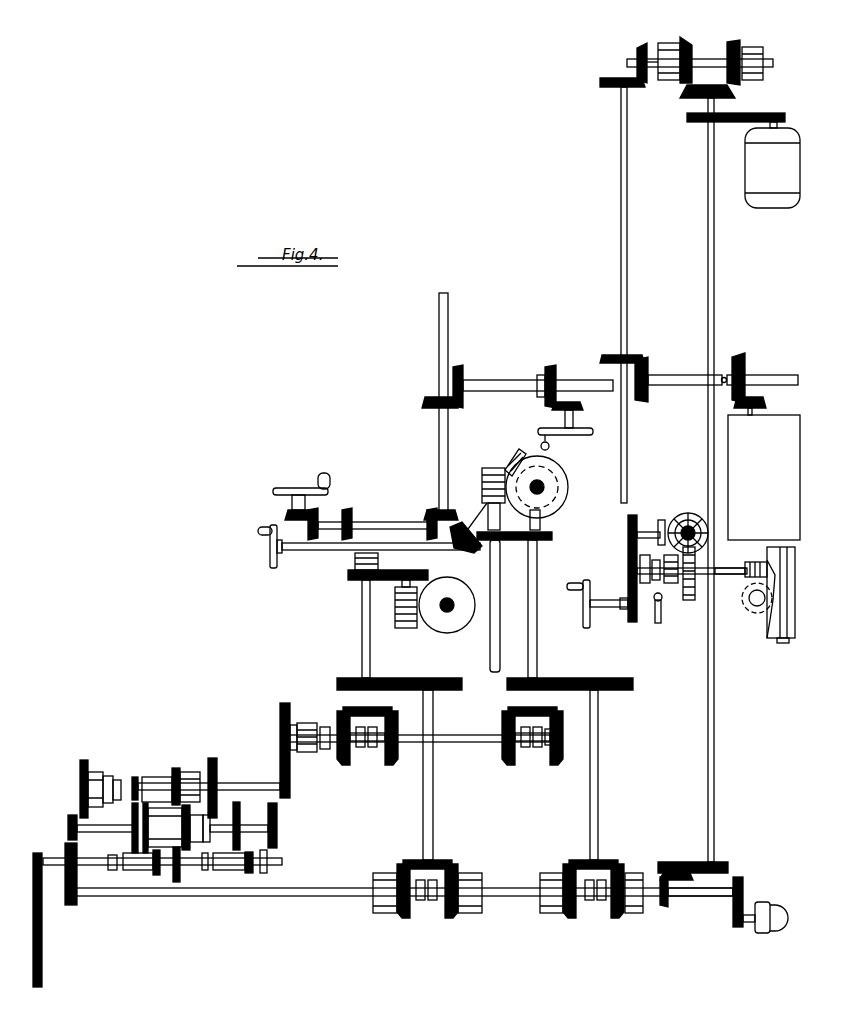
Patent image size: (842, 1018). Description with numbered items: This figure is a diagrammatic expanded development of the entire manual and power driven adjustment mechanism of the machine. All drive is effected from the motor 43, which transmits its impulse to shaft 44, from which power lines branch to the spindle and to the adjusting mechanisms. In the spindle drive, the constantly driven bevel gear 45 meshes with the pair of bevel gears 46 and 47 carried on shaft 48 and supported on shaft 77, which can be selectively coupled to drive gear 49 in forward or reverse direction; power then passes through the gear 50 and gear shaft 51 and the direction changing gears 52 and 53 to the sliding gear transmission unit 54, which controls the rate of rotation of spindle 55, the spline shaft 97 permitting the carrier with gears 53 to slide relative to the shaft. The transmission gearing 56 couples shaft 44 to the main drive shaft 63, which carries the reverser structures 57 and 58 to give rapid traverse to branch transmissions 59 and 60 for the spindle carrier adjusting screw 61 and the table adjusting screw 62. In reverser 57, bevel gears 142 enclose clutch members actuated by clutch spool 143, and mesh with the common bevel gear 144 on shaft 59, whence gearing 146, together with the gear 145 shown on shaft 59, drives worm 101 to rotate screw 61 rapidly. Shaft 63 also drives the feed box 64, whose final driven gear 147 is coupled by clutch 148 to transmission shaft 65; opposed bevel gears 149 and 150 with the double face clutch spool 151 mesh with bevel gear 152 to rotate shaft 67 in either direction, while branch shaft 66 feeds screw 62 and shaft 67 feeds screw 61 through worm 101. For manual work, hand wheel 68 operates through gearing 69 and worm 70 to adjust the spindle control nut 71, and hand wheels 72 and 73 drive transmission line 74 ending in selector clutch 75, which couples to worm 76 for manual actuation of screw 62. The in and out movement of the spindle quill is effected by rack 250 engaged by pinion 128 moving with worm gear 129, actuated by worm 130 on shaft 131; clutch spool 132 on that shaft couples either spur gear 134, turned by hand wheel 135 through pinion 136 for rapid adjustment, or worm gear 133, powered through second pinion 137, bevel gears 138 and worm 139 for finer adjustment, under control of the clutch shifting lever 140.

The motor 43 is at (773, 193).
The main drive shaft 44 is at (714, 290).
The bevel gear 45 is at (735, 94).
The bevel gear 46 is at (688, 43).
The bevel gear 47 is at (738, 42).
The shaft 48 is at (643, 43).
The gear 49 is at (637, 58).
The bevel gear 50 is at (600, 83).
The gear shaft 51 is at (627, 200).
The direction changing gears 52 is at (644, 355).
The direction changing gears 53 is at (745, 385).
The sliding gear transmission unit 54 is at (778, 430).
The spindle 55 is at (767, 548).
The transmission gearing 56 is at (680, 862).
The reverser structure 57 is at (596, 908).
The reverser structure 58 is at (428, 908).
The branch line transmission shaft 59 is at (598, 750).
The branch line transmission 60 is at (423, 792).
The spindle carrier adjusting screw 61 is at (545, 480).
The table adjusting screw 62 is at (450, 602).
The main drive shaft 63 is at (250, 896).
The feed box 64 is at (160, 785).
The transmission shaft 65 is at (466, 735).
The branch transmission shaft 66 is at (362, 636).
The branch transmission shaft 67 is at (537, 590).
The hand wheel 68 is at (270, 555).
The transmission gearing 69 is at (458, 527).
The worm 70 is at (519, 450).
The spindle control nut 71 is at (545, 480).
The hand wheel 72 is at (292, 488).
The hand wheel 73 is at (575, 420).
The transmission line 74 is at (372, 522).
The selector clutch 75 is at (352, 572).
The worm 76 is at (395, 610).
The shaft 77 is at (773, 63).
The spline shaft 97 is at (678, 386).
The worm 101 is at (494, 468).
The pinion 128 is at (760, 615).
The worm gear 129 is at (748, 598).
The worm 130 is at (745, 572).
The shaft 131 is at (730, 568).
The clutch spool 132 is at (648, 584).
The worm gear 133 is at (690, 600).
The spur gear 134 is at (630, 568).
The hand wheel 135 is at (583, 605).
The pinion 136 is at (622, 612).
The second pinion 137 is at (640, 520).
The bevel gears 138 is at (682, 512).
The worm 139 is at (686, 512).
The clutch shifting lever 140 is at (689, 600).
The bevel gears 142 is at (566, 918).
The clutch spool 143 is at (600, 905).
The bevel gear 144 is at (582, 868).
The gear 145 is at (555, 678).
The gearing 146 is at (505, 541).
The final driven gear 147 is at (283, 715).
The clutch 148 is at (300, 723).
The bevel gear 149 is at (525, 748).
The bevel gear 150 is at (552, 748).
The double face clutch spool 151 is at (538, 748).
The bevel gear 152 is at (548, 712).
The rack 250 is at (772, 638).